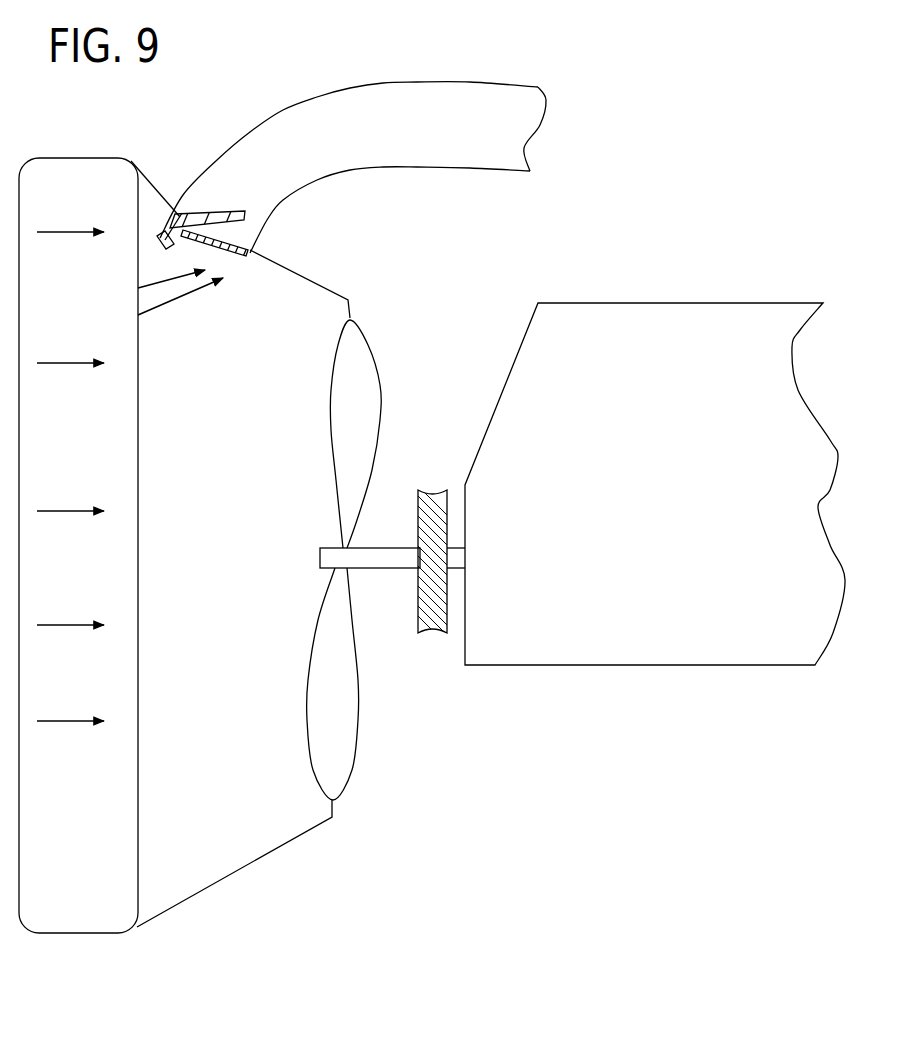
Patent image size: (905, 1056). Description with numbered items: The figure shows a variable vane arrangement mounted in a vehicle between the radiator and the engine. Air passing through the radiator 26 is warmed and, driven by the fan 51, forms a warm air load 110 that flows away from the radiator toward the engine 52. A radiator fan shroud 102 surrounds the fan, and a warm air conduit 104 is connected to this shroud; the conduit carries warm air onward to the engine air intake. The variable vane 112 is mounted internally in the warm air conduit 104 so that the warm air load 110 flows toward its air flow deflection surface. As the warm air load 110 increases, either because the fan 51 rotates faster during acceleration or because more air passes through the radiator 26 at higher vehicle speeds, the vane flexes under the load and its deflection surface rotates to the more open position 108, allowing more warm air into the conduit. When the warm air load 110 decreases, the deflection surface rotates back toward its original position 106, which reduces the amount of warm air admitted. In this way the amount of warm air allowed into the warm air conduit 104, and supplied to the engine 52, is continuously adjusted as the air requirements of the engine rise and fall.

The radiator 26 is at (80, 924).
The fan 51 is at (355, 772).
The engine 52 is at (697, 483).
The radiator fan shroud 102 is at (313, 277).
The warm air conduit 104 is at (417, 168).
The original position of the variable vane 106 is at (244, 257).
The open position of the variable vane 108 is at (226, 207).
The warm air load 110 is at (170, 303).
The variable vane 112 is at (172, 241).